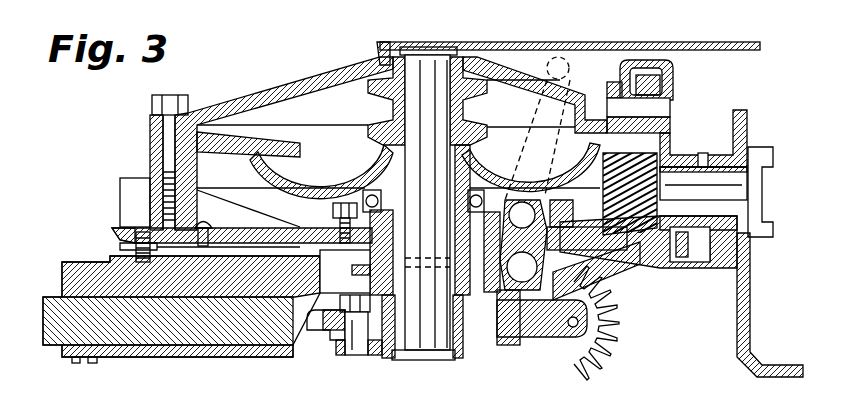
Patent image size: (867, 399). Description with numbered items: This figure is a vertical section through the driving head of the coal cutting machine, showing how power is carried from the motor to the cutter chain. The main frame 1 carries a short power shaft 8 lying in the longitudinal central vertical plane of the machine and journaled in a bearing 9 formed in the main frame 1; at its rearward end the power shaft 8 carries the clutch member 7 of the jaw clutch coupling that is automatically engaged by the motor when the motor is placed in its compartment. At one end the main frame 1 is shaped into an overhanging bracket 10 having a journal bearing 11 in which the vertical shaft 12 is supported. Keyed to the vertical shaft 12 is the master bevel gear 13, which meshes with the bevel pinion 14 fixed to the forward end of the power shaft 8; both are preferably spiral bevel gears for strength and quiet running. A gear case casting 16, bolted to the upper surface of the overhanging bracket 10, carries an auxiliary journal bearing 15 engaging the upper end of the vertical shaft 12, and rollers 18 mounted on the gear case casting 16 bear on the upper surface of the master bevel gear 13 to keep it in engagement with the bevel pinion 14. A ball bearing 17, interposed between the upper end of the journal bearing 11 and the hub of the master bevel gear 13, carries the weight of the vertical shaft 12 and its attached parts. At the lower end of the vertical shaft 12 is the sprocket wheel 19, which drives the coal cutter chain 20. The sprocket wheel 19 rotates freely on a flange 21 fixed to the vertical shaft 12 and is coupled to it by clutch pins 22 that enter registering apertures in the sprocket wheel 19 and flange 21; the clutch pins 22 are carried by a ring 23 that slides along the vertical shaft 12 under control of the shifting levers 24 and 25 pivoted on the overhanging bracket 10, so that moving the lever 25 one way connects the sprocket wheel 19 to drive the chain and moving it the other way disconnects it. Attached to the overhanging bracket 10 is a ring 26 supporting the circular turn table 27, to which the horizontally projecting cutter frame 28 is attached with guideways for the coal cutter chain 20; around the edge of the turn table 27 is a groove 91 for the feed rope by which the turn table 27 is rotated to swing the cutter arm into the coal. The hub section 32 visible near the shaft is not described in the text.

The main frame 1 is at (752, 320).
The clutch member 7 is at (757, 240).
The power shaft 8 is at (690, 255).
The bearing 9 is at (712, 155).
The overhanging bracket 10 is at (308, 228).
The journal bearing 11 is at (370, 259).
The vertical shaft 12 is at (405, 175).
The master bevel gear 13 is at (275, 166).
The bevel pinion 14 is at (603, 204).
The auxiliary journal bearing 15 is at (383, 60).
The gear case casting 16 is at (325, 82).
The ball bearing 17 is at (343, 210).
The rollers 18 is at (648, 78).
The sprocket wheel 19 is at (316, 332).
The coal cutter chain 20 is at (566, 340).
The flange 21 is at (388, 358).
The clutch pins 22 is at (355, 357).
The ring 23 is at (365, 282).
The shifting lever 24 is at (445, 272).
The shifting lever 25 is at (560, 110).
The ring 26 is at (136, 250).
The turn table 27 is at (118, 229).
The cutter frame 28 is at (88, 327).
The hub 32 is at (380, 110).
The groove 91 is at (122, 246).